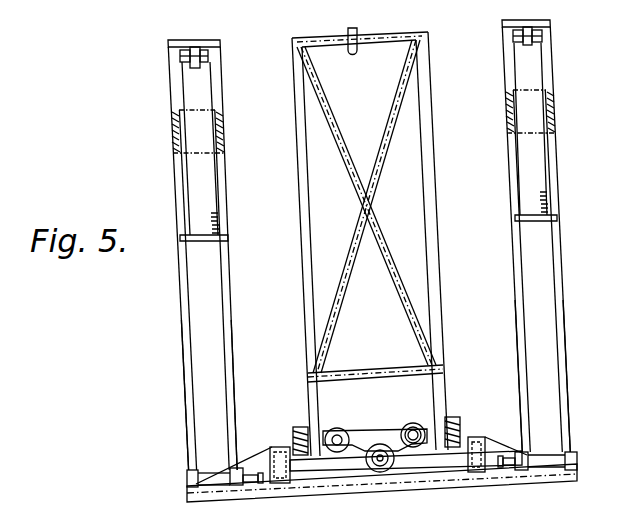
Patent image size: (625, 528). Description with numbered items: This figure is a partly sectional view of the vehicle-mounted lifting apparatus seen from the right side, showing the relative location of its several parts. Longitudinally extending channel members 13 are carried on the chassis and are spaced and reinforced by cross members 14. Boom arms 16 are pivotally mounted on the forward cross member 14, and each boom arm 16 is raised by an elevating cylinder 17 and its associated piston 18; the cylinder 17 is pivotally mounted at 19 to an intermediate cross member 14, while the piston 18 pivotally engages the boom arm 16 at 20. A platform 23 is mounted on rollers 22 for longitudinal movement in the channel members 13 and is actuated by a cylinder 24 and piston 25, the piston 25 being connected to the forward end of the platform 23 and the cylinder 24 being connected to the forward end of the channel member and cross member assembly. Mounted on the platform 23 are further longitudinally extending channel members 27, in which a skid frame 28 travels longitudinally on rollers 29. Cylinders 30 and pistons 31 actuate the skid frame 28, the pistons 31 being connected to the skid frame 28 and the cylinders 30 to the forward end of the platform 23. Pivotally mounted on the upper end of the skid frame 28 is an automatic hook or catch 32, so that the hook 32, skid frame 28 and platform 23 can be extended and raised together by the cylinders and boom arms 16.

The channel members 13 is at (274, 448).
The cross members 14 is at (578, 476).
The boom arms 16 is at (177, 84).
The elevating cylinder 17 is at (212, 303).
The piston 18 is at (205, 198).
The pivot mounting of cylinder 19 is at (187, 476).
The pivot connection of piston 20 is at (205, 55).
The rollers 22 is at (283, 487).
The platform 23 is at (335, 463).
The cylinder 24 is at (382, 473).
The piston 25 is at (397, 461).
The channel members 27 is at (297, 428).
The skid frame 28 is at (428, 250).
The rollers 29 is at (322, 434).
The cylinders 30 is at (410, 428).
The pistons 31 is at (398, 440).
The automatic hook 32 is at (357, 54).